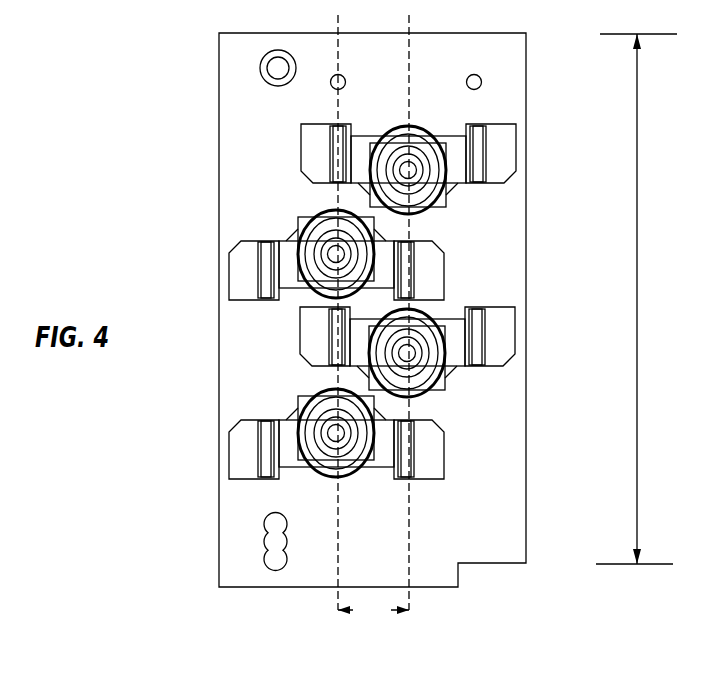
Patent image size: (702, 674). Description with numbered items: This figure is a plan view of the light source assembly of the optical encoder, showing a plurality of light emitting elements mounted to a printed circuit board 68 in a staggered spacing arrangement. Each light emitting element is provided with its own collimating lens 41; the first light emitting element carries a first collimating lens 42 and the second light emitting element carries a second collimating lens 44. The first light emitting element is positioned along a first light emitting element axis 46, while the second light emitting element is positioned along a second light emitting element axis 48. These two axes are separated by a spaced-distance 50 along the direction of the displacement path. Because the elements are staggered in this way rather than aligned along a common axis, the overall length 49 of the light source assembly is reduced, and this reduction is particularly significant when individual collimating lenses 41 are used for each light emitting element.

The collimating lens 41 is at (300, 153).
The first collimating lens 42 is at (428, 262).
The second collimating lens 44 is at (478, 123).
The first light emitting element axis 46 is at (337, 602).
The second light emitting element axis 48 is at (408, 602).
The overall length 49 is at (636, 299).
The spaced-distance 50 is at (373, 610).
The printed circuit board 68 is at (230, 123).